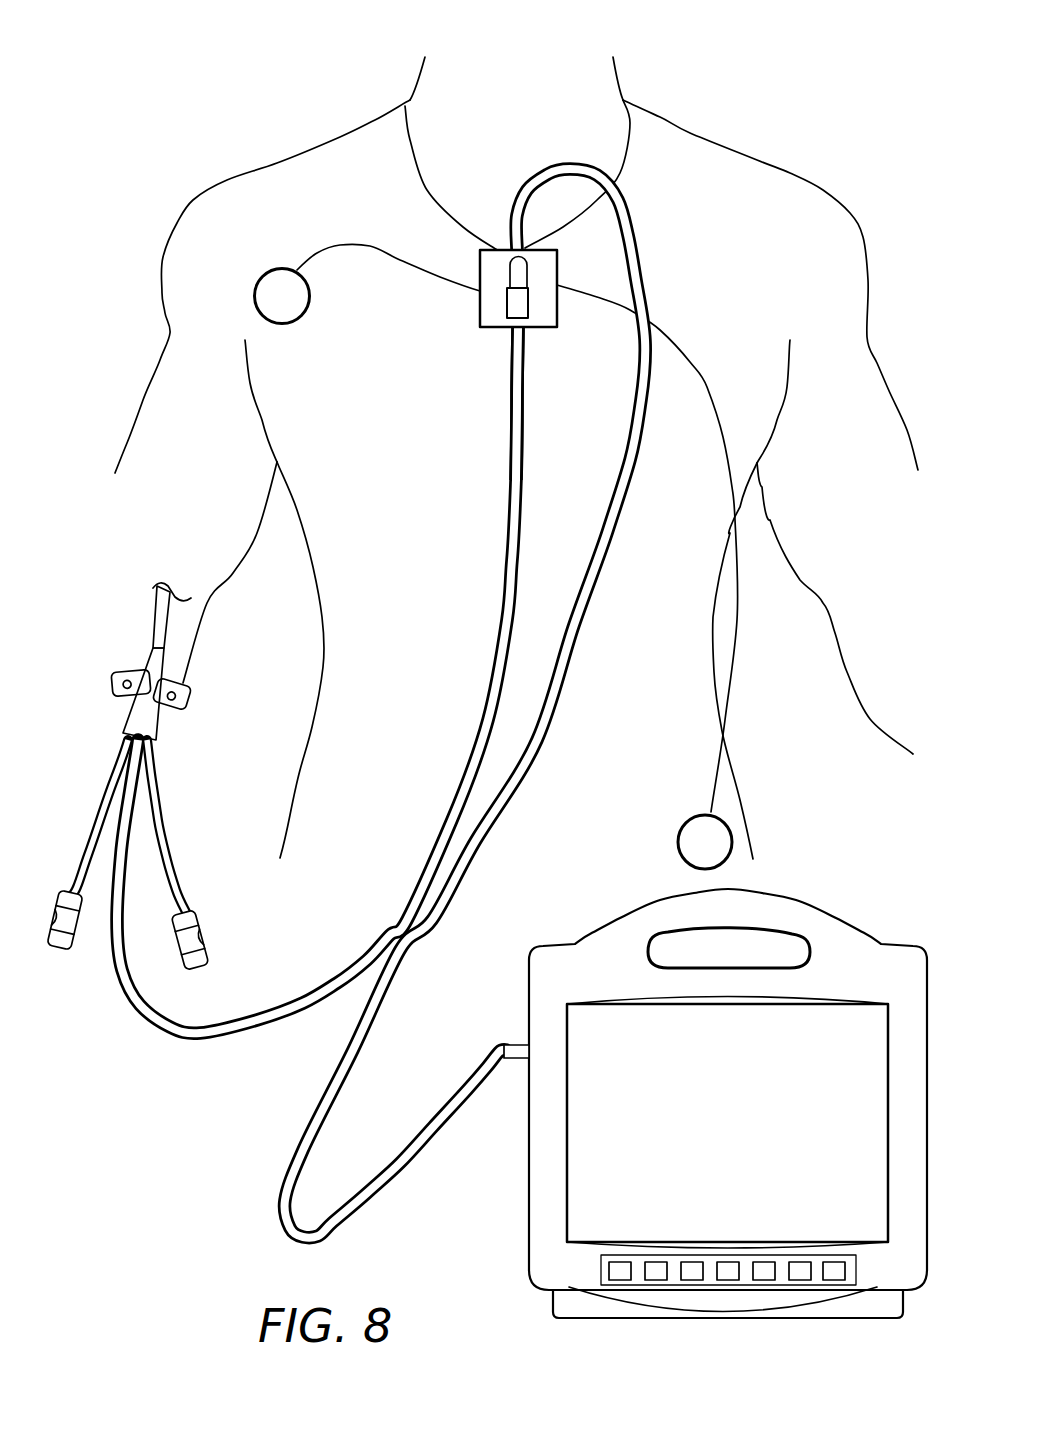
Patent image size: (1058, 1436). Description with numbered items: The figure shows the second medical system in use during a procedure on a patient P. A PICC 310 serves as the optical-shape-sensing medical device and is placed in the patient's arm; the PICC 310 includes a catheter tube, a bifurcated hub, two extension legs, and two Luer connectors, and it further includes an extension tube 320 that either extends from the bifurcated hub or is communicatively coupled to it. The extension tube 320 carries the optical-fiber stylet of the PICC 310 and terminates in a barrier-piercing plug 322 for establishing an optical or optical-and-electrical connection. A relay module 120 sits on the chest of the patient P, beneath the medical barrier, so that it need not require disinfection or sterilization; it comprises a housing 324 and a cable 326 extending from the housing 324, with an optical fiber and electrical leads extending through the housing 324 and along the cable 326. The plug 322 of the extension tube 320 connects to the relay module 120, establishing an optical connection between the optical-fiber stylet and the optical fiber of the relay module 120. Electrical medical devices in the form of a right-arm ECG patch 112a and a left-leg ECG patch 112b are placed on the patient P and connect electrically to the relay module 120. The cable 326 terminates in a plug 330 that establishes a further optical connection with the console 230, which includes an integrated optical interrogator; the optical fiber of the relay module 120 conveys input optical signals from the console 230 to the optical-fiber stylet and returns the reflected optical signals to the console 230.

The patient P is at (617, 63).
The relay module 120 is at (428, 203).
The barrier-piercing plug 322 is at (508, 297).
The housing 324 is at (492, 330).
The cable 326 is at (618, 200).
The extension tube 320 is at (220, 1040).
The PICC 310 is at (90, 927).
The ECG patch 112a is at (287, 327).
The ECG patch 112b is at (678, 840).
The console 230 is at (703, 1094).
The plug 330 is at (516, 1044).